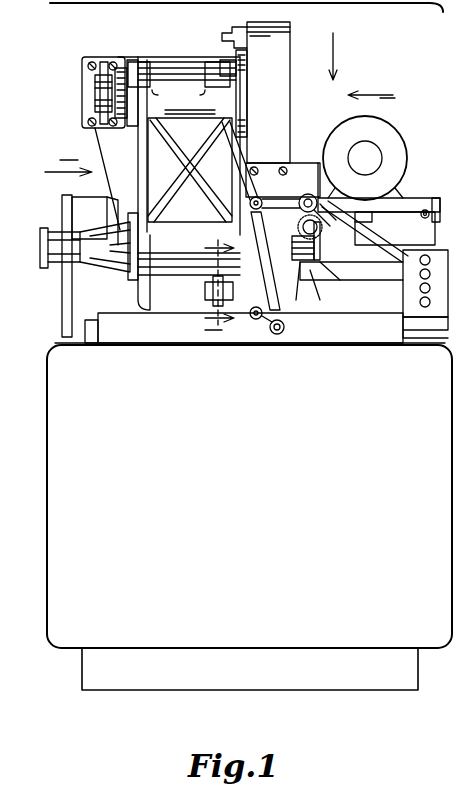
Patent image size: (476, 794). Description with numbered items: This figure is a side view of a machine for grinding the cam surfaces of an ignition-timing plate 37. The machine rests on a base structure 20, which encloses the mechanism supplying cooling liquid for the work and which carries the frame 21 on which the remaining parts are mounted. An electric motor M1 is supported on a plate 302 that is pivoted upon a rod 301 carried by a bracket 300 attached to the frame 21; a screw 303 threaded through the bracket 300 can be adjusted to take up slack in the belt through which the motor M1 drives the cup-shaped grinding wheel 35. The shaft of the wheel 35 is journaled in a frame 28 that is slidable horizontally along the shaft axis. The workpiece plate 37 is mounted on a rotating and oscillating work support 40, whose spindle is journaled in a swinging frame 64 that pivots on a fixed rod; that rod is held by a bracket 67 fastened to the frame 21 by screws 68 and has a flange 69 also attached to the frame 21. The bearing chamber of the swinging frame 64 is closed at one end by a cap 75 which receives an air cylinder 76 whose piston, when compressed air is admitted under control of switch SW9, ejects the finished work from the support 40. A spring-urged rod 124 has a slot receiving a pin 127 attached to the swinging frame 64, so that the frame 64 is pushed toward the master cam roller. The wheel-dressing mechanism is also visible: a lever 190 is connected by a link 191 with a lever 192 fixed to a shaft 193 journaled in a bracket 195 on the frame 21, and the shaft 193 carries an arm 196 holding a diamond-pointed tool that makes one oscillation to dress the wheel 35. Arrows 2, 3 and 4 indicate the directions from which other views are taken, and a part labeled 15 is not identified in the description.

The lever 190 is at (249, 496).
The base structure 20 is at (78, 652).
The air cylinder 76 is at (44, 262).
The cap 75 is at (106, 258).
The bracket 67 is at (88, 78).
The screws 68 is at (113, 62).
The frame 21 is at (180, 57).
The swinging frame 64 is at (195, 224).
The flange 69 is at (246, 78).
The switch SW9 is at (226, 31).
The section arrow 3 is at (326, 56).
The section arrow 2 is at (371, 88).
The section line 4 is at (139, 246).
The electric motor M1 is at (404, 120).
The bracket 195 is at (265, 165).
The shaft 193 is at (318, 196).
The lever 192 is at (284, 205).
The link 191 is at (266, 236).
The work support 40 is at (284, 328).
The arm 196 is at (332, 210).
The grinding wheel 35 is at (320, 233).
The plate 302 is at (410, 200).
The rod 301 is at (426, 210).
The bracket 300 is at (420, 237).
The element 15 is at (470, 241).
The screw 303 is at (372, 245).
The frame 28 is at (316, 268).
The plate 37 is at (340, 262).
The pin 127 is at (205, 288).
The rod 124 is at (212, 302).